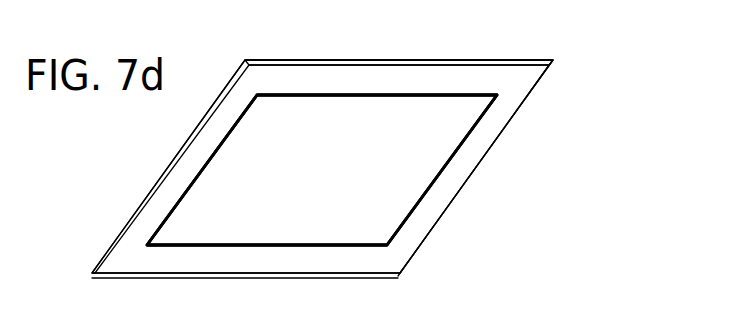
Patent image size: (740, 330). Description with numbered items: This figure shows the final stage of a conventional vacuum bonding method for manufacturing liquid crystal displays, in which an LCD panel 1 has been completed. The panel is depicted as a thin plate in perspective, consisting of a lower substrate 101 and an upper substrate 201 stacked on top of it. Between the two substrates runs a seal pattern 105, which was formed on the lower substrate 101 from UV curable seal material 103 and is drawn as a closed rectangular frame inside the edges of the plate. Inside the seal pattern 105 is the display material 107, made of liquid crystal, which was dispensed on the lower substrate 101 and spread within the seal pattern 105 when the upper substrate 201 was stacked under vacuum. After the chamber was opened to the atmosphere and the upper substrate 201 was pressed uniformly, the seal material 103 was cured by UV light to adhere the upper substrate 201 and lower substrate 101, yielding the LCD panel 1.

The LCD panel 1 is at (593, 76).
The lower substrate 101 is at (523, 107).
The upper substrate 201 is at (531, 59).
The seal material 103 is at (437, 178).
The seal pattern 105 is at (322, 170).
The display material 107 is at (343, 205).